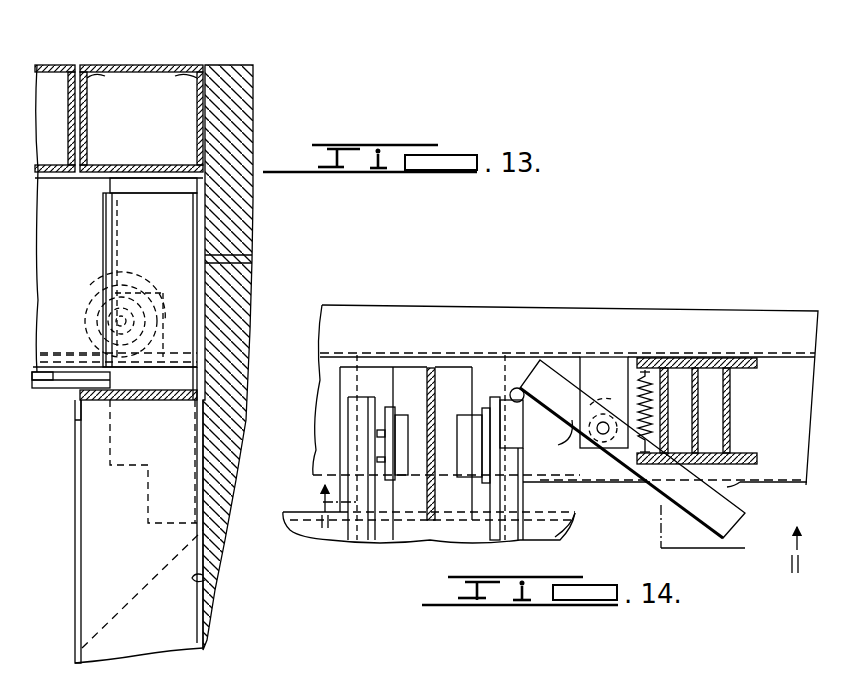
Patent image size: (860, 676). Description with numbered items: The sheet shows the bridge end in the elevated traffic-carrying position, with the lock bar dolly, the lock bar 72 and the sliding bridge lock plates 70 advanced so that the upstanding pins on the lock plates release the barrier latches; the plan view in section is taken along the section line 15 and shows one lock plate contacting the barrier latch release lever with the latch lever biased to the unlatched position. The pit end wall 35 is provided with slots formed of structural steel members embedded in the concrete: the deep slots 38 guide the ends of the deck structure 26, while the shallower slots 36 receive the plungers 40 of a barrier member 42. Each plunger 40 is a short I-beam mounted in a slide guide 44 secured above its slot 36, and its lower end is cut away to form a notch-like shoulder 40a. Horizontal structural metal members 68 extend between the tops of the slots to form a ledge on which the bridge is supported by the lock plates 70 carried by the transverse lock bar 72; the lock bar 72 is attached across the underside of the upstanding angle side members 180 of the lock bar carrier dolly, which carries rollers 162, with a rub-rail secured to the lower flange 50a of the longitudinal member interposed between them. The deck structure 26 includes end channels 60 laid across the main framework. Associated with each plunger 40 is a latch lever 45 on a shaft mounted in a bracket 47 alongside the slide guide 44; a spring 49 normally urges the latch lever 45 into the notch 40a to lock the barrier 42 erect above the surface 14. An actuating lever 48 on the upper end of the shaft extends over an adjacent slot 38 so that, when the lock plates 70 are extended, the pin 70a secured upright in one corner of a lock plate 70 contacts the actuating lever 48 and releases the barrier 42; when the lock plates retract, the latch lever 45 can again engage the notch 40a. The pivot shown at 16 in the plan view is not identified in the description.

In FIG. 13, the surface 14 is at (230, 66).
In FIG. 14, the surface 14 is at (565, 408).
In FIG. 13, the deck structure 26 is at (52, 64).
In FIG. 13, the barrier member 42 is at (135, 65).
In FIG. 13, the end channel 60 is at (75, 103).
In FIG. 13, the plunger 40 is at (112, 183).
In FIG. 14, the plunger 40 is at (700, 408).
In FIG. 13, the slide guide 44 is at (110, 270).
In FIG. 14, the slide guide 44 is at (733, 386).
In FIG. 13, the roller 162 is at (118, 293).
In FIG. 14, the roller 162 is at (404, 416).
In FIG. 13, the angle side member 180 is at (160, 300).
In FIG. 14, the angle side member 180 is at (505, 540).
In FIG. 13, the latch lever 45 is at (43, 372).
In FIG. 14, the latch lever 45 is at (727, 522).
In FIG. 13, the sliding bridge lock plate 70 is at (67, 390).
In FIG. 13, the structural metal member 68 is at (128, 392).
In FIG. 14, the structural metal member 68 is at (740, 434).
In FIG. 13, the end wall 35 is at (73, 560).
In FIG. 13, the notch-like shoulder 40a is at (143, 468).
In FIG. 13, the slot 38 is at (203, 578).
In FIG. 14, the slot 38 is at (372, 358).
In FIG. 14, the lower flange 50a is at (390, 540).
In FIG. 14, the pin 70a is at (518, 388).
In FIG. 14, the actuating lever 48 is at (556, 445).
In FIG. 14, the bracket 47 is at (593, 368).
In FIG. 14, the pin 16 is at (603, 409).
In FIG. 14, the spring 49 is at (688, 360).
In FIG. 14, the slot 36 is at (727, 487).
In FIG. 14, the lock bar 72 is at (576, 527).
In FIG. 14, the section line 15- 15 is at (555, 528).